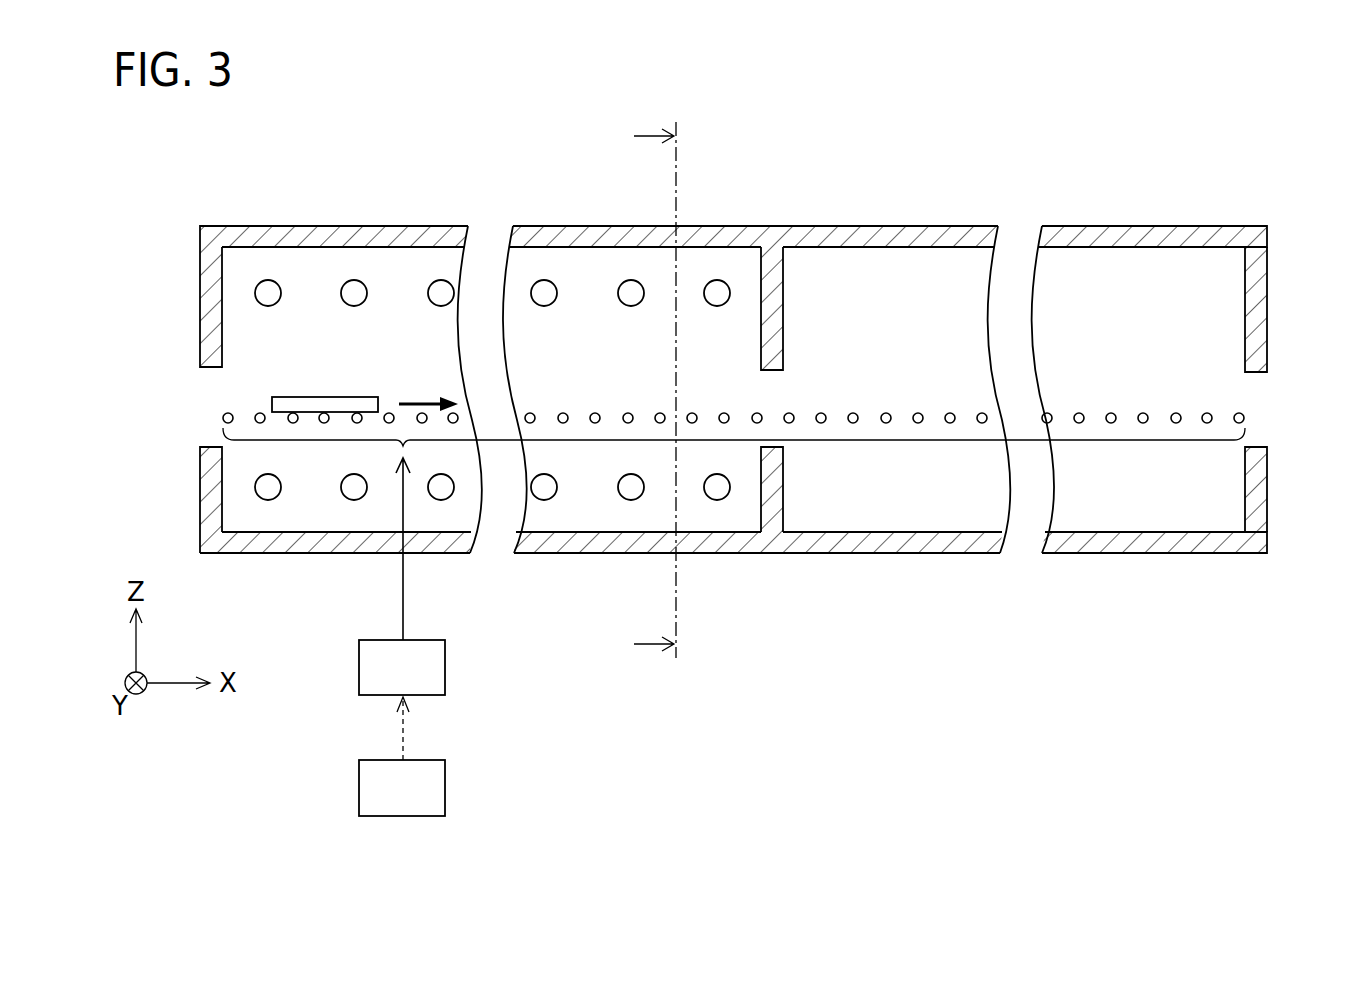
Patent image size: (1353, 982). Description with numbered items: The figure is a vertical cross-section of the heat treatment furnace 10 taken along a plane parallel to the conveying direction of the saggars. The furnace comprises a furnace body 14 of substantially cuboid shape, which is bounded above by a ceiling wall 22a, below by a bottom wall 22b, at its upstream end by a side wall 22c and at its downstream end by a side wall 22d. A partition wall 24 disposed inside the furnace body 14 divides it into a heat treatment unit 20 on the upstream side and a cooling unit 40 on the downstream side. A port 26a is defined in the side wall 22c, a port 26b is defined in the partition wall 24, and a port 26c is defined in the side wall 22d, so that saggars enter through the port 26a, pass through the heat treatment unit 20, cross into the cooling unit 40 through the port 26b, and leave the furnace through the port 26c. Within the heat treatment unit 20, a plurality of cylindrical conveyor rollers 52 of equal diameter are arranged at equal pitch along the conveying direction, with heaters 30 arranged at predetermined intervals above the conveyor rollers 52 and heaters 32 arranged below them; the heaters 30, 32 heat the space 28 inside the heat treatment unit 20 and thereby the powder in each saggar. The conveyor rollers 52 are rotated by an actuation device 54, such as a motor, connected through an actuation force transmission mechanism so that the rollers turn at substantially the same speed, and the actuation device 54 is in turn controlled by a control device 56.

The heat treatment furnace 10 is at (1251, 100).
The furnace body 14 is at (178, 226).
The heat treatment unit 20 is at (428, 205).
The ceiling wall 22a is at (243, 237).
The bottom wall 22b is at (248, 547).
The side wall 22c is at (207, 300).
The side wall 22d is at (1256, 313).
The partition wall 24 is at (773, 312).
The port 26a is at (205, 378).
The port 26b is at (775, 372).
The port 26c is at (1263, 452).
The space 28 is at (573, 342).
The heaters 30 is at (354, 293).
The heaters 32 is at (354, 490).
The cooling unit 40 is at (818, 195).
The conveyor rollers 52 is at (563, 424).
The actuation device 54 is at (370, 667).
The control device 56 is at (370, 786).